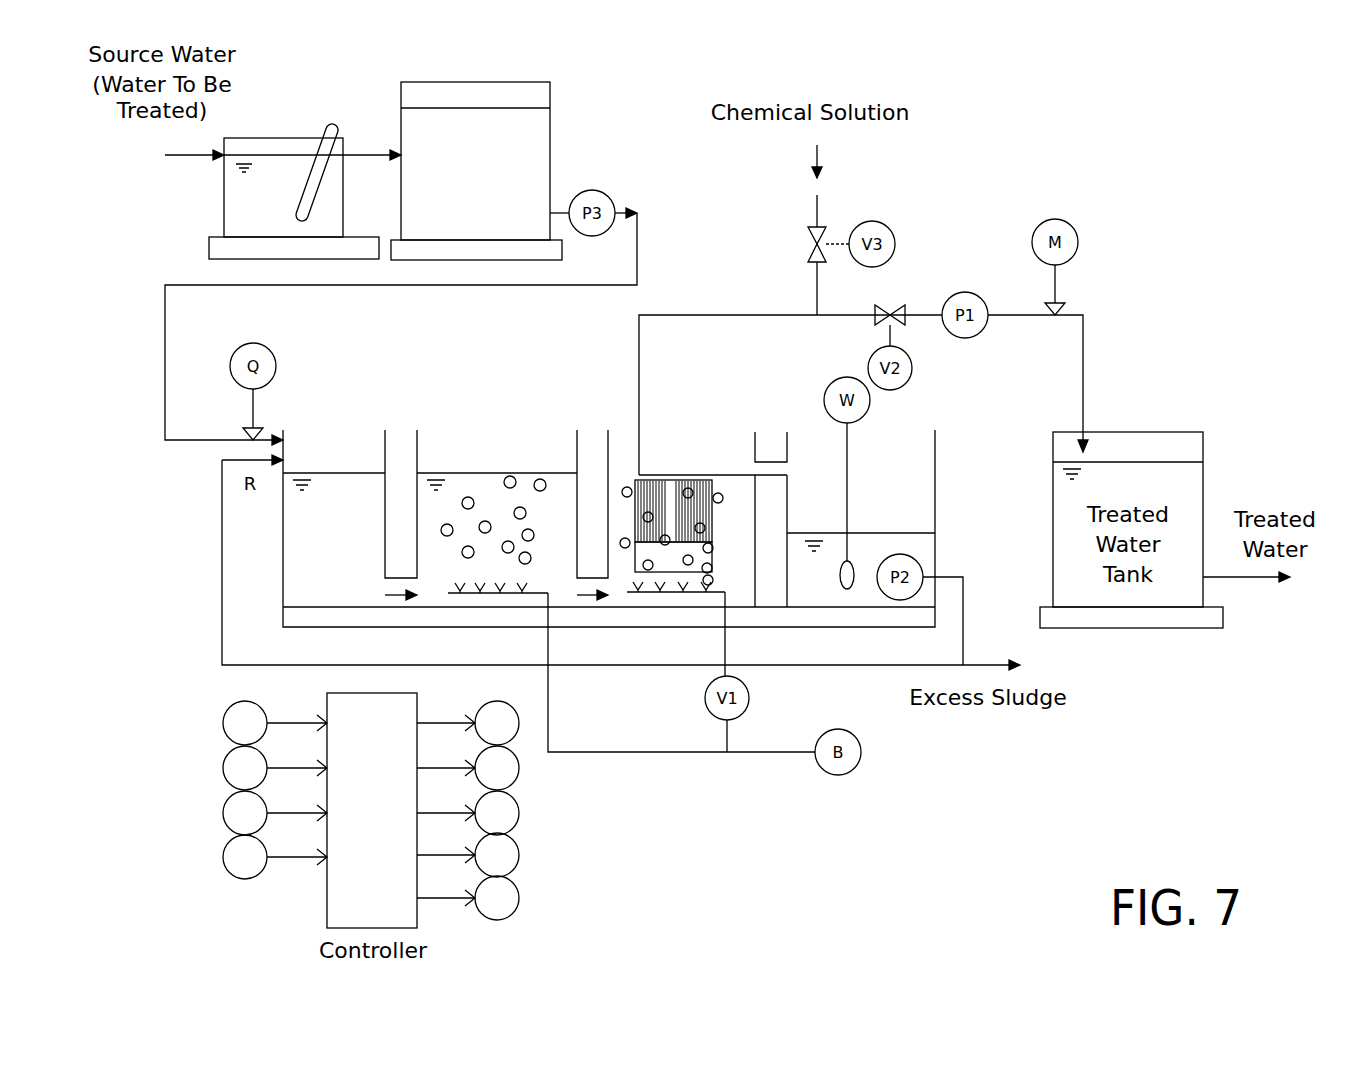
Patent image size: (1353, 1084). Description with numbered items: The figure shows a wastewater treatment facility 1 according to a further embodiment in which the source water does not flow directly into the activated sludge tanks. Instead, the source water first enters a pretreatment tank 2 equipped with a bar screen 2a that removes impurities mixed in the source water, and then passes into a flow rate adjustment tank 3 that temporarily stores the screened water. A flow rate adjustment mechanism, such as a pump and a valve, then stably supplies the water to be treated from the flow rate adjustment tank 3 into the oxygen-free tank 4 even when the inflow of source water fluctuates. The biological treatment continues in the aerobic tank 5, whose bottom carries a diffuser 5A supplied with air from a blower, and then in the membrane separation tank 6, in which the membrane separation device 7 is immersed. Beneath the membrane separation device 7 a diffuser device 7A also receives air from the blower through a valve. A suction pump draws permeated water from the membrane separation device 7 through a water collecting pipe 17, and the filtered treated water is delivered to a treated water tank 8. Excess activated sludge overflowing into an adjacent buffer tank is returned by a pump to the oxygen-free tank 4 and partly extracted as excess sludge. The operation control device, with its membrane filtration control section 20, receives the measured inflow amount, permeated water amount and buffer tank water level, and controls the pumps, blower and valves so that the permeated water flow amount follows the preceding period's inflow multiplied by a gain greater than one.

The wastewater treatment facility 1 is at (699, 272).
The pretreatment tank 2 is at (224, 206).
The bar screen 2a is at (333, 128).
The flow rate adjustment tank 3 is at (540, 120).
The oxygen-free tank 4 is at (333, 473).
The aerobic tank 5 is at (485, 473).
The diffuser 5A is at (460, 597).
The membrane separation tank 6 is at (661, 474).
The membrane separation device 7 is at (690, 479).
The diffuser device 7A is at (660, 596).
The treated water tank 8 is at (1176, 440).
The water collecting pipe 17 is at (731, 315).
The membrane filtration control section 20 is at (371, 810).